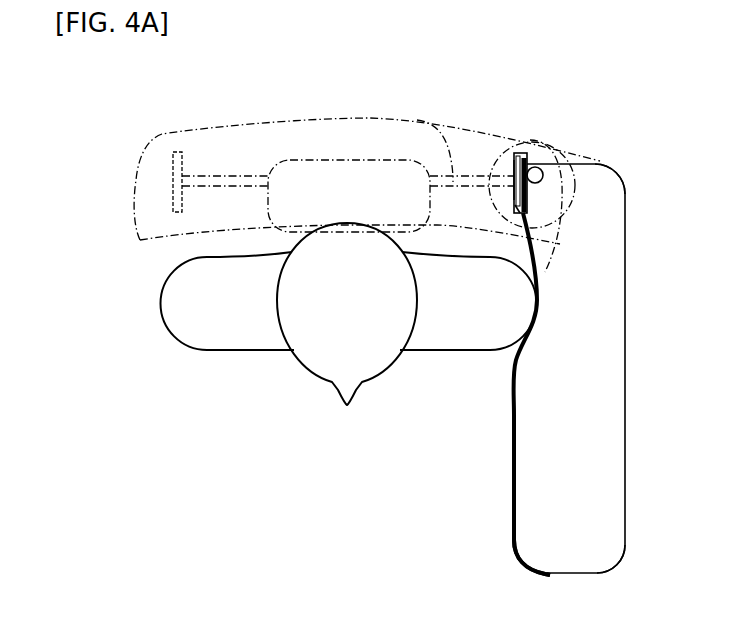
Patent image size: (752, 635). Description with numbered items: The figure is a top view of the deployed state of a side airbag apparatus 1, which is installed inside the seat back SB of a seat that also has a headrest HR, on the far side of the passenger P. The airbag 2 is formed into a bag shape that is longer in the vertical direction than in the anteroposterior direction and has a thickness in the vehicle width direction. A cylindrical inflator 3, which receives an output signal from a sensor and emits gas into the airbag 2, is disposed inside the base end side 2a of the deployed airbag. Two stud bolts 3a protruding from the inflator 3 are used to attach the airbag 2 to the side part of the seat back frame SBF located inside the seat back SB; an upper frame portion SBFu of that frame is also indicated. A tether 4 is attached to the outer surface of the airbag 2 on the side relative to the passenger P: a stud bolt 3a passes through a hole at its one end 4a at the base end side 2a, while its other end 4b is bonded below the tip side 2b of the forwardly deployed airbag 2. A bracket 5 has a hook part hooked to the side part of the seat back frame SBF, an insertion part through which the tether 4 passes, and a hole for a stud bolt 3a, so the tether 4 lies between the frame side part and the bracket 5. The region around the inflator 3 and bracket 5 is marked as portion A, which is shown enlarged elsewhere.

The side airbag apparatus 1 is at (578, 354).
The airbag 2 is at (610, 373).
The base end side 2a is at (607, 192).
The tip side 2b is at (605, 555).
The inflator 3 is at (565, 171).
The stud bolt 3a is at (510, 177).
The tether 4 is at (520, 354).
The one end 4a is at (517, 150).
The other end 4b is at (535, 578).
The bracket 5 is at (530, 205).
The portion A is at (572, 183).
The seat back SB is at (233, 143).
The headrest HR is at (328, 173).
The seat back frame SBF is at (520, 150).
The upper frame of seat back SBFu is at (417, 120).
The passenger P is at (232, 335).